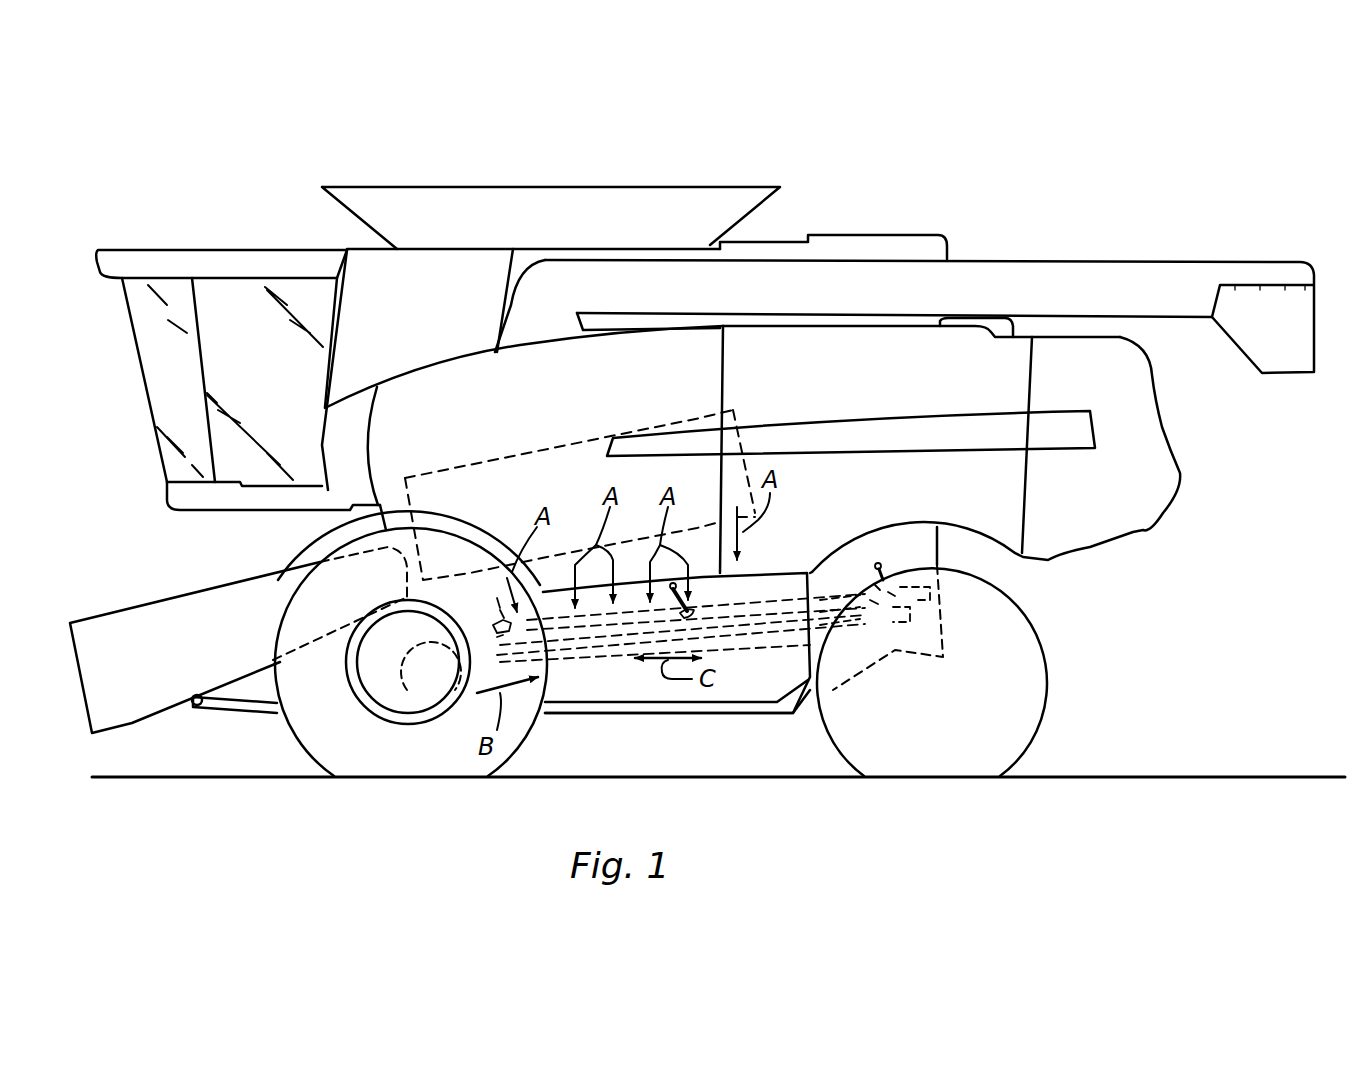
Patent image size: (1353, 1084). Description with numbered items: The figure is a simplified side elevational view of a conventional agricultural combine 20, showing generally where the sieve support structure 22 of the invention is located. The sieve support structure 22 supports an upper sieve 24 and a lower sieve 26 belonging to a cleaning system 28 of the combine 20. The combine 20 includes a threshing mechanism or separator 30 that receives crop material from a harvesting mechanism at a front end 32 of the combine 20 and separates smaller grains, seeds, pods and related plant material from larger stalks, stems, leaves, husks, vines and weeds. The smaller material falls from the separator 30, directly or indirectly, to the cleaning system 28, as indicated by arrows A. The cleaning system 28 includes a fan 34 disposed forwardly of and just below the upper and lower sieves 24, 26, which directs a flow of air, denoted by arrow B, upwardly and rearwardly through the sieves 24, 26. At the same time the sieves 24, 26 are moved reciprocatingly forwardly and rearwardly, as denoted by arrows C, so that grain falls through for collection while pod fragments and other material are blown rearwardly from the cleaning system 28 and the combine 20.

The agricultural combine 20 is at (1037, 218).
The sieve support structure 22 is at (762, 596).
The upper sieve 24 is at (841, 595).
The lower sieve 26 is at (777, 633).
The cleaning system 28 is at (900, 557).
The threshing mechanism or separator 30 is at (573, 443).
The front end 32 is at (170, 597).
The fan 34 is at (407, 693).